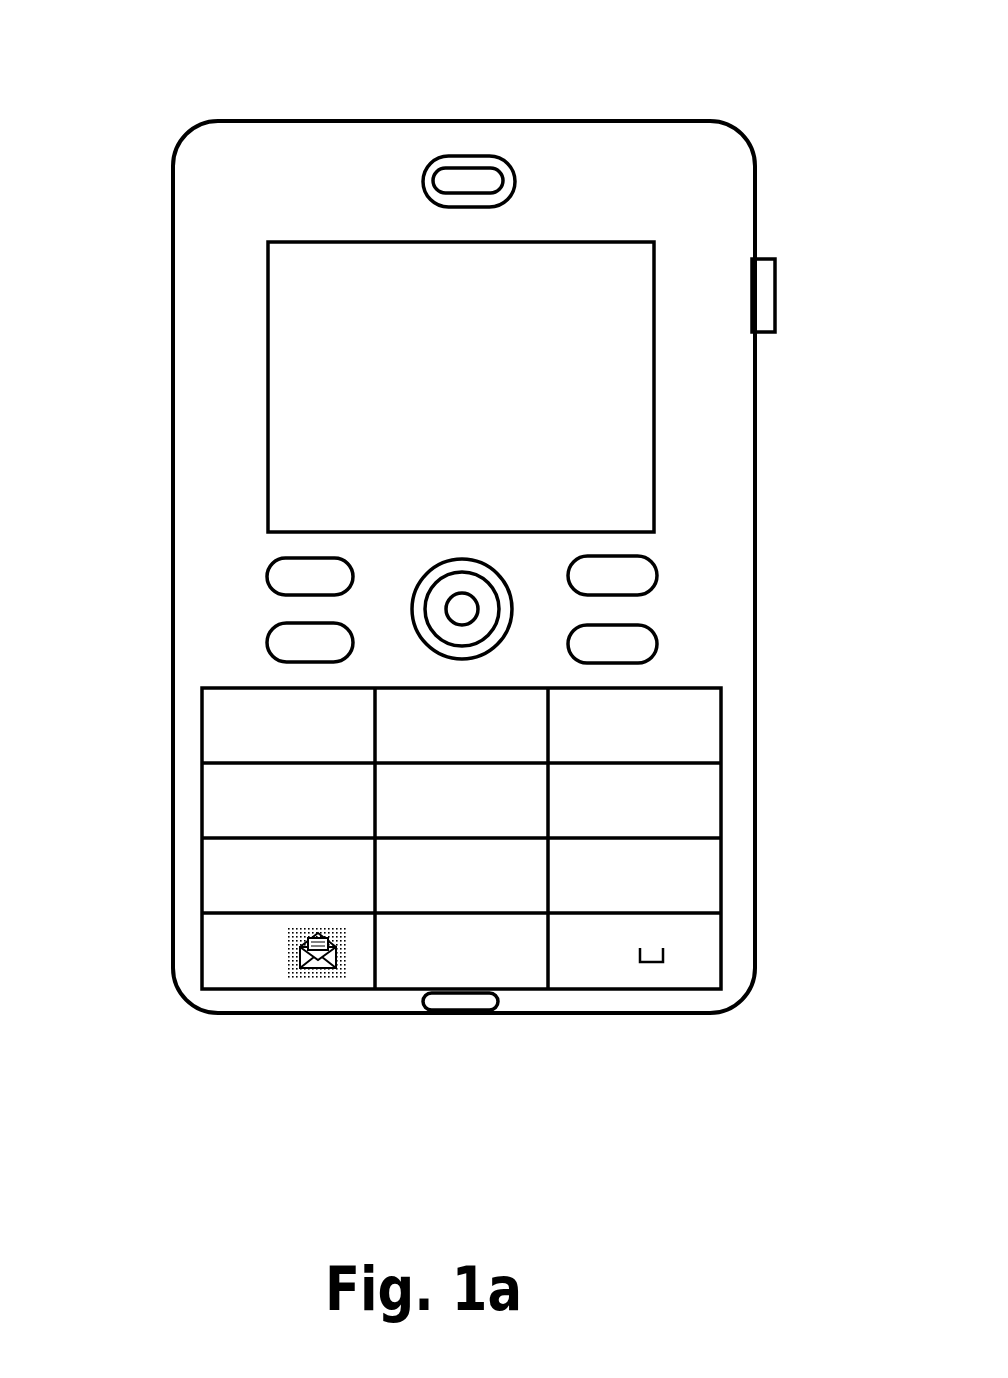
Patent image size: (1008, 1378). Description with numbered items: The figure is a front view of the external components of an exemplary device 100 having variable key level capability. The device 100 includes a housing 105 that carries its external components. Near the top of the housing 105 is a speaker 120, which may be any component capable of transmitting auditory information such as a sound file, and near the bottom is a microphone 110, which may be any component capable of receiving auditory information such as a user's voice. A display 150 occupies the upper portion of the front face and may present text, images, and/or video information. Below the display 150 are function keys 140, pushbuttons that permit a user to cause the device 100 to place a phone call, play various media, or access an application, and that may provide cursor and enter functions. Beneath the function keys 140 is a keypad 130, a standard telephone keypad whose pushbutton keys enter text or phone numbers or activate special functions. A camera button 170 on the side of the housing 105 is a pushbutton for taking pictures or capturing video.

The device 100 is at (225, 76).
The housing 105 is at (217, 553).
The microphone 110 is at (467, 1011).
The speaker 120 is at (436, 157).
The keypad 130 is at (773, 695).
The function keys 140 is at (773, 554).
The display 150 is at (655, 385).
The camera button 170 is at (776, 282).